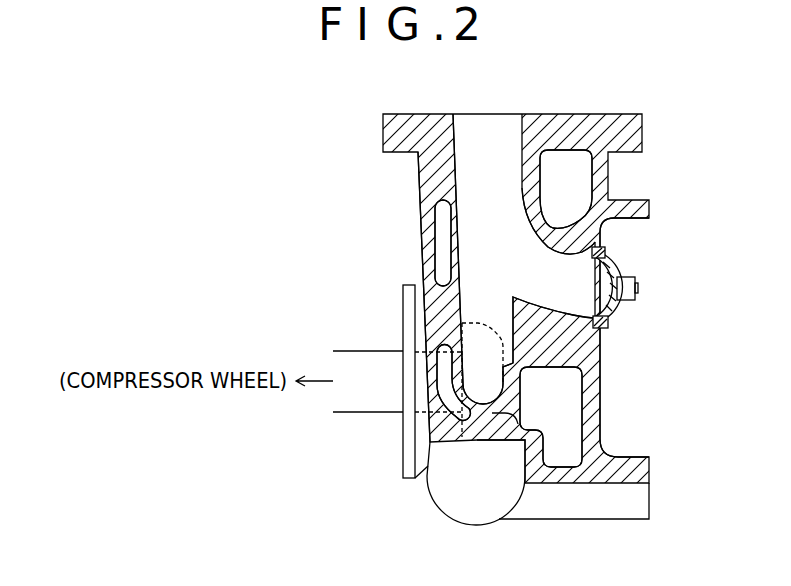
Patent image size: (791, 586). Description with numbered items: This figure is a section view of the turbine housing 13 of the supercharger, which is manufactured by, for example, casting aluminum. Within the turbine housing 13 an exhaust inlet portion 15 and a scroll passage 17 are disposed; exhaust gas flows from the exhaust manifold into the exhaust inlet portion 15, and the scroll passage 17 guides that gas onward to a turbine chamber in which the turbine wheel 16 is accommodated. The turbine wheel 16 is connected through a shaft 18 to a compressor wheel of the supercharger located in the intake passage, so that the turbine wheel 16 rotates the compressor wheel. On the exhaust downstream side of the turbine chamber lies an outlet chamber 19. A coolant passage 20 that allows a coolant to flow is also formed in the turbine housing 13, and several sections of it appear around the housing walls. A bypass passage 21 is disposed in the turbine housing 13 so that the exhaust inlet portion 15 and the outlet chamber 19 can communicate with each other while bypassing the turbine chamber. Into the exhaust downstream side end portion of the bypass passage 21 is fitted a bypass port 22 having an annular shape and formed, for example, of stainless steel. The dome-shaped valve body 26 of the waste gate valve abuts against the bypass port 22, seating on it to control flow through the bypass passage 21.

The turbine housing 13 is at (642, 130).
The exhaust inlet portion 15 is at (456, 160).
The turbine wheel 16 is at (490, 344).
The scroll passage 17 is at (505, 368).
The shaft 18 is at (358, 349).
The outlet chamber 19 is at (641, 421).
The coolant passage 20 is at (583, 198).
The bypass passage 21 is at (571, 256).
The bypass port 22 is at (600, 329).
The valve body 26 is at (623, 268).